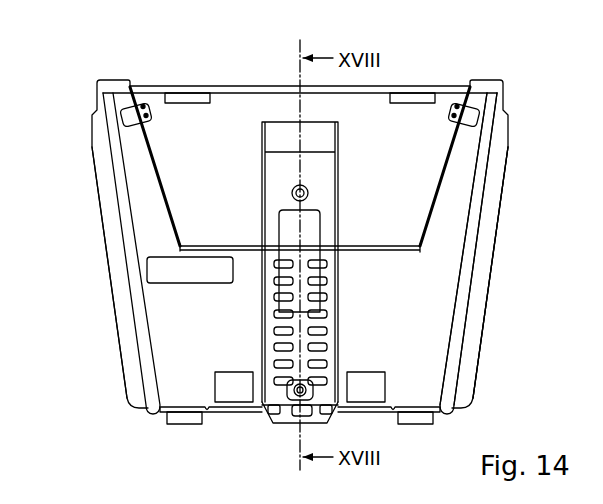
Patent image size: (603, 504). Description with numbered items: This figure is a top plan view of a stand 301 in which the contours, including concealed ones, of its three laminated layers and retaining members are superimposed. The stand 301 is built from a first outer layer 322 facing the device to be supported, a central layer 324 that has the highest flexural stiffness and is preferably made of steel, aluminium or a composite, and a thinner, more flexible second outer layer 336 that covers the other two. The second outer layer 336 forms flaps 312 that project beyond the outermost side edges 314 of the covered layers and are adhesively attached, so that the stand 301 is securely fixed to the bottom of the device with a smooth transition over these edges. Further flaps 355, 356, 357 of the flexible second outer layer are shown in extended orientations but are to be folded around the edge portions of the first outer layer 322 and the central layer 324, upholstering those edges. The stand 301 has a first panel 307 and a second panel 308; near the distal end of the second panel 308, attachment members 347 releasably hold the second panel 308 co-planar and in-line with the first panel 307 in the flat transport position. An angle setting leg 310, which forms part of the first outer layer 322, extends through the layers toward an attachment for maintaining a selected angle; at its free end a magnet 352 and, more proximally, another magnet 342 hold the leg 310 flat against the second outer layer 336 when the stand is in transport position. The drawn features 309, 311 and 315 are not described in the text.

The stand 301 is at (130, 426).
The first panel 307 is at (420, 350).
The second panel 308 is at (228, 158).
The shelf 309 is at (385, 252).
The angle setting leg 310 is at (262, 322).
The central column 311 is at (287, 120).
The flaps 312 is at (133, 341).
The outermost edges 314 is at (118, 213).
The right foot 315 is at (357, 411).
The first outer layer 322 is at (469, 303).
The central layer 324 is at (462, 272).
The second outer layer 336 is at (494, 252).
The magnet 342 is at (308, 188).
The attachment members 347 is at (142, 105).
The magnet 352 is at (294, 394).
The flap 355 is at (187, 421).
The flap 356 is at (243, 411).
The flap 357 is at (198, 84).